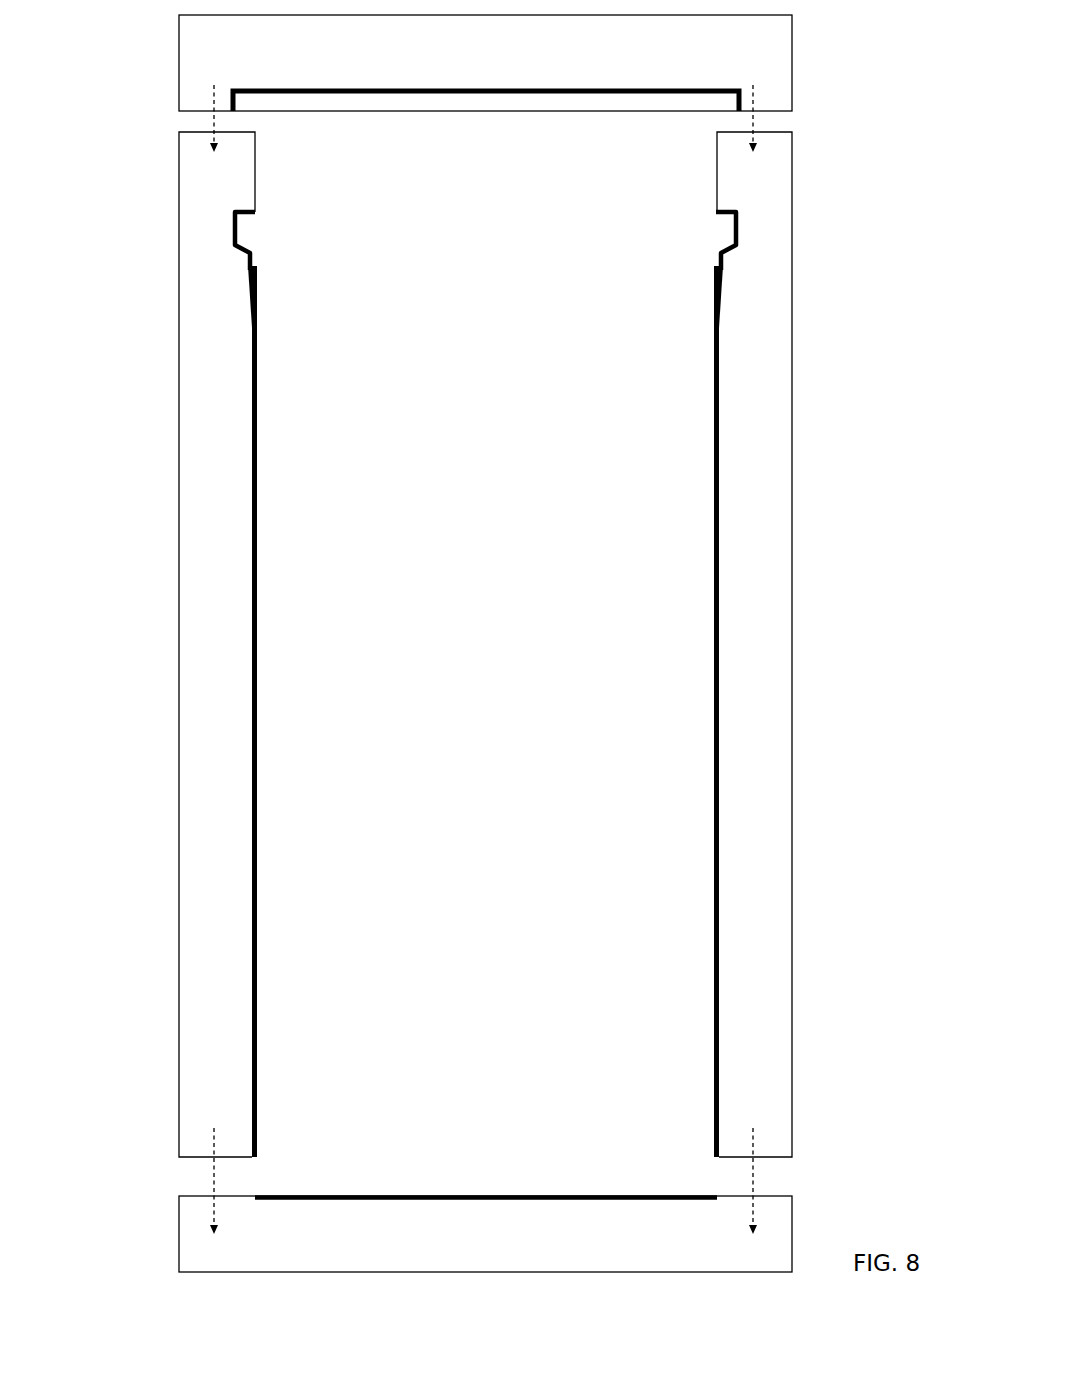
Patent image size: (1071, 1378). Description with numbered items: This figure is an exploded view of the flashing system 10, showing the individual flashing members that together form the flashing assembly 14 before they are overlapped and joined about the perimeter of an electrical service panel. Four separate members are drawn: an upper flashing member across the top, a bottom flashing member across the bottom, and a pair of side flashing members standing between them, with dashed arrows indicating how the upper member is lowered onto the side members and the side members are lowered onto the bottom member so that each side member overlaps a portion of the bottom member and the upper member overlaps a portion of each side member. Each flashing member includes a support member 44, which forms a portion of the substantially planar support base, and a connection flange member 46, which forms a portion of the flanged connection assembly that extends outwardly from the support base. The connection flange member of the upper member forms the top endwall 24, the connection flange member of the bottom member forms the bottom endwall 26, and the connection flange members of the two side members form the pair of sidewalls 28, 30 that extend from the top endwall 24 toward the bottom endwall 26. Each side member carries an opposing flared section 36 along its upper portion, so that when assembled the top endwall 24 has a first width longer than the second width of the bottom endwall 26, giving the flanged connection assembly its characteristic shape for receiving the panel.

The flashing system 10 is at (88, 240).
The flashing assembly 14 is at (510, 63).
The top endwall 24 is at (532, 88).
The bottom endwall 26 is at (553, 1196).
The sidewall 28 is at (257, 502).
The sidewall 30 is at (677, 711).
The flared section 36 is at (223, 263).
The support member 44 is at (792, 648).
The connection flange member 46 is at (717, 648).